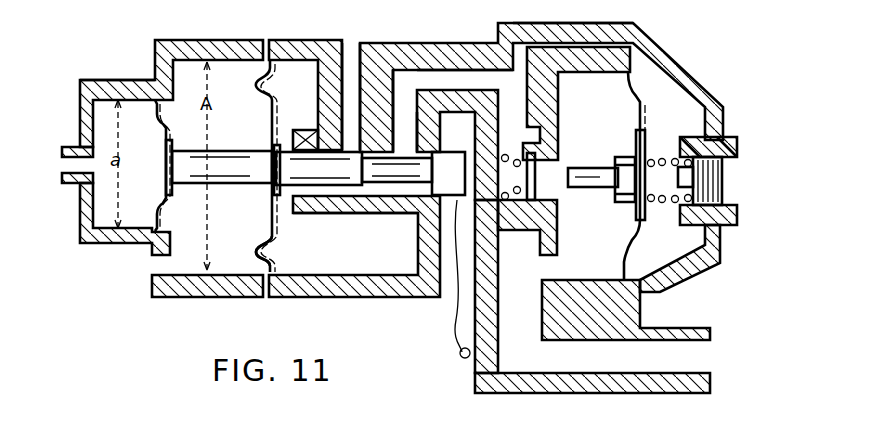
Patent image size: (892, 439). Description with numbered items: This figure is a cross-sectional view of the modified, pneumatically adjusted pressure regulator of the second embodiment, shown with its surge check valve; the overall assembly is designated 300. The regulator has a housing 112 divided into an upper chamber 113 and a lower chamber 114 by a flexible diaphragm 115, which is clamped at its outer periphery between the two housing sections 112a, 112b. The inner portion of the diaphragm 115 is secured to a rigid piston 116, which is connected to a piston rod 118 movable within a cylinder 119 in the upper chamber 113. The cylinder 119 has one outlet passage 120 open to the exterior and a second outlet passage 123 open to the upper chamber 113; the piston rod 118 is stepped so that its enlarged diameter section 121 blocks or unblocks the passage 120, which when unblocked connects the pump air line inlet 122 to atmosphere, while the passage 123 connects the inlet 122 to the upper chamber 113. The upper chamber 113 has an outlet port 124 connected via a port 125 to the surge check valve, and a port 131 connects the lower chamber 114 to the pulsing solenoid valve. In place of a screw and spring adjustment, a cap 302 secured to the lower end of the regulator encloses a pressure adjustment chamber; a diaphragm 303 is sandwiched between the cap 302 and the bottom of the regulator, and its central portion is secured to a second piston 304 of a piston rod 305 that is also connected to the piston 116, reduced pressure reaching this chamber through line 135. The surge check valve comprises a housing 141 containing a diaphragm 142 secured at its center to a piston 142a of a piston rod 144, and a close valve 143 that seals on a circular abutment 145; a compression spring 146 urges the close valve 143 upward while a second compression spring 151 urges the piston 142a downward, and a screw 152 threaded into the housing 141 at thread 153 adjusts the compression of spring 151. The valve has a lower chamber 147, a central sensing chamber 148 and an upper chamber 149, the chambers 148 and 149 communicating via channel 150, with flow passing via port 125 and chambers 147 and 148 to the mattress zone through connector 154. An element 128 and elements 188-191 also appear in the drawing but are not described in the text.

The housing assembly 300 is at (137, 48).
The cap 302 is at (92, 72).
The line 135 is at (58, 163).
The port 131 is at (155, 263).
The diaphragm 303 is at (160, 118).
The second piston 304 is at (180, 192).
The piston rod 305 is at (238, 163).
The housing 112 is at (296, 182).
The housing section 112a is at (283, 44).
The housing section 112b is at (258, 48).
The rigid piston 116 is at (257, 229).
The flexible diaphragm 115 is at (267, 245).
The seal 128 is at (303, 130).
The upper chamber 113 is at (318, 272).
The lower chamber 114 is at (230, 292).
The piston rod 118 is at (337, 214).
The cylinder 119 is at (366, 214).
The second outlet passage 123 is at (407, 212).
The enlarged diameter section 121 is at (370, 173).
The outlet passage 120 is at (353, 50).
The outlet port 124 is at (402, 137).
The port 125 is at (508, 82).
The housing 141 is at (702, 80).
The channel 150 is at (636, 42).
The compression spring 146 is at (498, 157).
The pump air line inlet 122 is at (452, 314).
The connector 154 is at (700, 362).
The sensor lead 188-191 is at (468, 358).
The close valve 143 is at (523, 143).
The circular abutment 145 is at (542, 155).
The lower chamber 147 is at (515, 231).
The piston rod 144 is at (582, 187).
The piston 142a is at (628, 141).
The diaphragm 142 is at (634, 100).
The second compression spring 151 is at (663, 205).
The thread 153 is at (730, 134).
The screw 152 is at (713, 200).
The upper chamber 149 is at (688, 284).
The central (sensing) chamber 148 is at (575, 273).